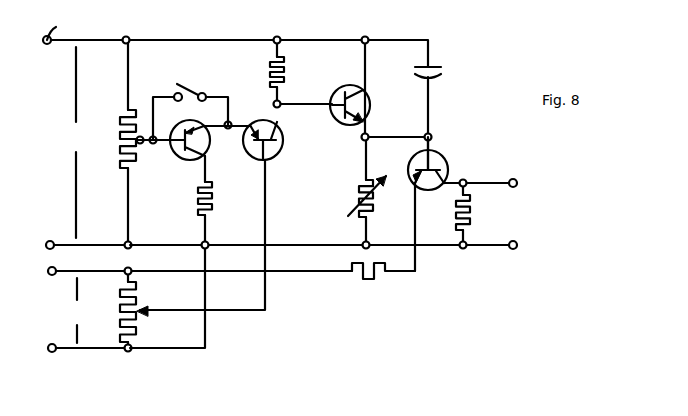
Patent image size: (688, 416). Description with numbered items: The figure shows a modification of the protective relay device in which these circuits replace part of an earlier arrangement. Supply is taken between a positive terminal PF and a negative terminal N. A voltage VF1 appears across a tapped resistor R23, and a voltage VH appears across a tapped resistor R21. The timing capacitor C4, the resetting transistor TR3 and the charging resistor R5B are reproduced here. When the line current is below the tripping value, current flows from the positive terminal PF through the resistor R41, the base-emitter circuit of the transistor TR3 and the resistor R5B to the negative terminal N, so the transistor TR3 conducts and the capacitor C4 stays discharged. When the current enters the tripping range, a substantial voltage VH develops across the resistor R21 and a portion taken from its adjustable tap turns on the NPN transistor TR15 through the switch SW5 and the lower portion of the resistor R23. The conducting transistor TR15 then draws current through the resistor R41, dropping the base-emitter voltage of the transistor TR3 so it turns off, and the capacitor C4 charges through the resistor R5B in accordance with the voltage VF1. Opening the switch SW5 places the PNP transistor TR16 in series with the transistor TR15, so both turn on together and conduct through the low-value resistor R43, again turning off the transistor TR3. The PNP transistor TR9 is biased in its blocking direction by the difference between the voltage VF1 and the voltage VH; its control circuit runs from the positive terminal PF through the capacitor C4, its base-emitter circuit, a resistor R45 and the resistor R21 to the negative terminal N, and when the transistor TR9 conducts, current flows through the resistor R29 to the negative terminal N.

The positive terminal PF is at (61, 30).
The voltage across the resistor R23 VF1 is at (71, 142).
The voltage across the resistor R21 VH is at (74, 310).
The negative terminal N is at (186, 243).
The resistor R23 is at (120, 120).
The switch SW5 is at (184, 80).
The transistor TR16 is at (176, 154).
The transistor TR15 is at (274, 154).
The resistor R43 is at (212, 210).
The resistor R41 is at (270, 70).
The resetting transistor TR3 is at (340, 88).
The timing capacitor C4 is at (413, 72).
The transistor TR9 is at (436, 157).
The charging resistor R5B is at (359, 192).
The resistor R29 is at (470, 214).
The resistor R21 is at (143, 298).
The resistor R45 is at (366, 280).